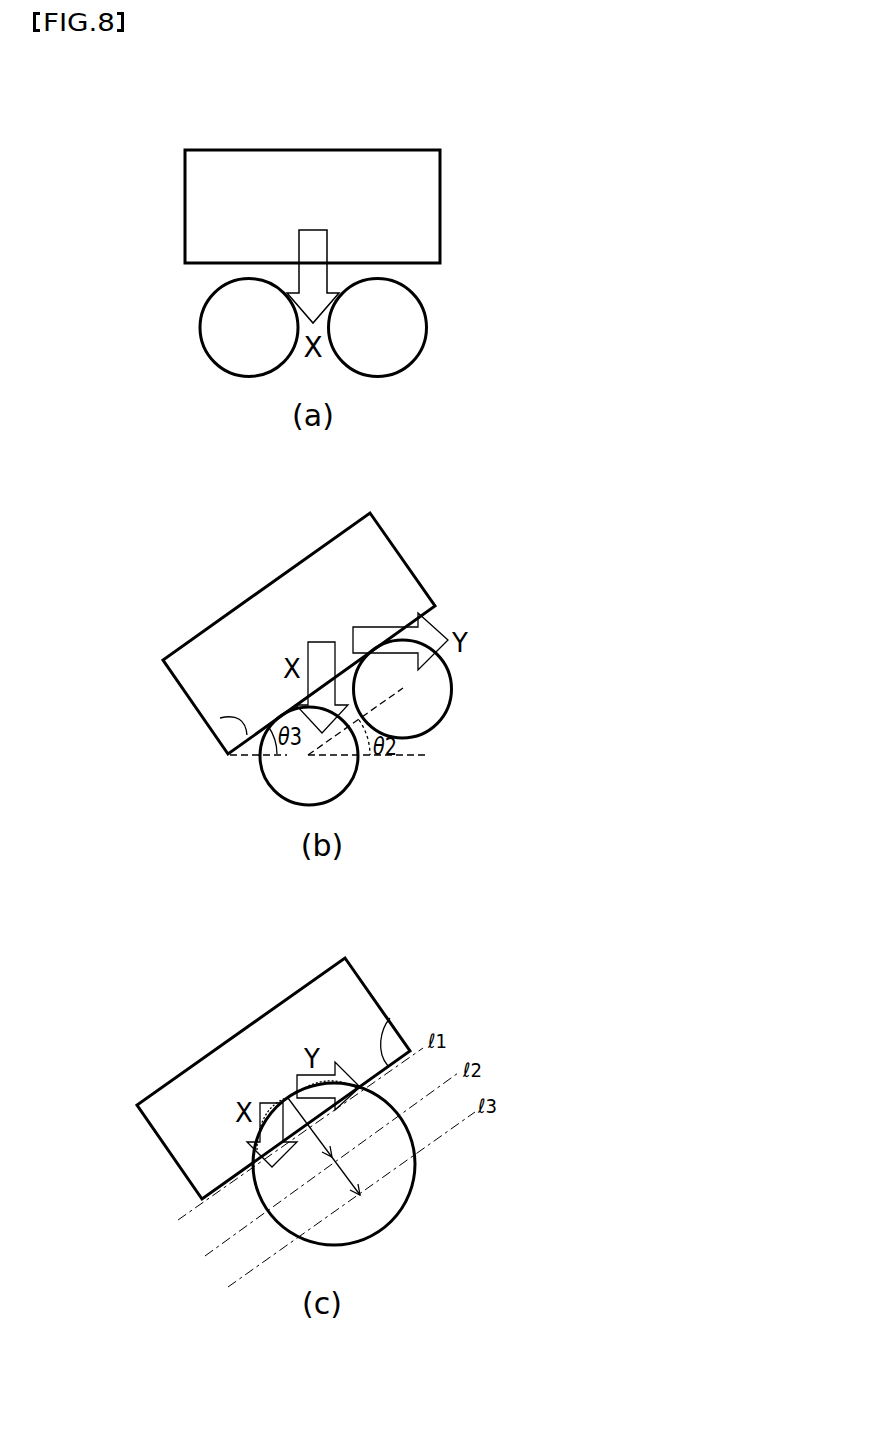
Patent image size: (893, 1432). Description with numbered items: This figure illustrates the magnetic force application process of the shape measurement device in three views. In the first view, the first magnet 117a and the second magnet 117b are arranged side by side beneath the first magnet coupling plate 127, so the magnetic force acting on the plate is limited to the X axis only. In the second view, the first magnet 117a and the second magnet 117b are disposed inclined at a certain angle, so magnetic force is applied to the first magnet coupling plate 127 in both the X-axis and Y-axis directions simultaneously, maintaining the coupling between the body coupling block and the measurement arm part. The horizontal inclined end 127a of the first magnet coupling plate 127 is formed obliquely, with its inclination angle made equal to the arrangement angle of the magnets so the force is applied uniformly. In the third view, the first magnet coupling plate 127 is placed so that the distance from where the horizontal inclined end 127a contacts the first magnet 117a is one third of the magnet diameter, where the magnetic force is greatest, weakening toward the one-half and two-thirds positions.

The first magnet coupling plate 127 is at (307, 162).
The horizontal inclined end 127a is at (220, 718).
The first magnet 117a is at (220, 333).
The second magnet 117b is at (410, 333).